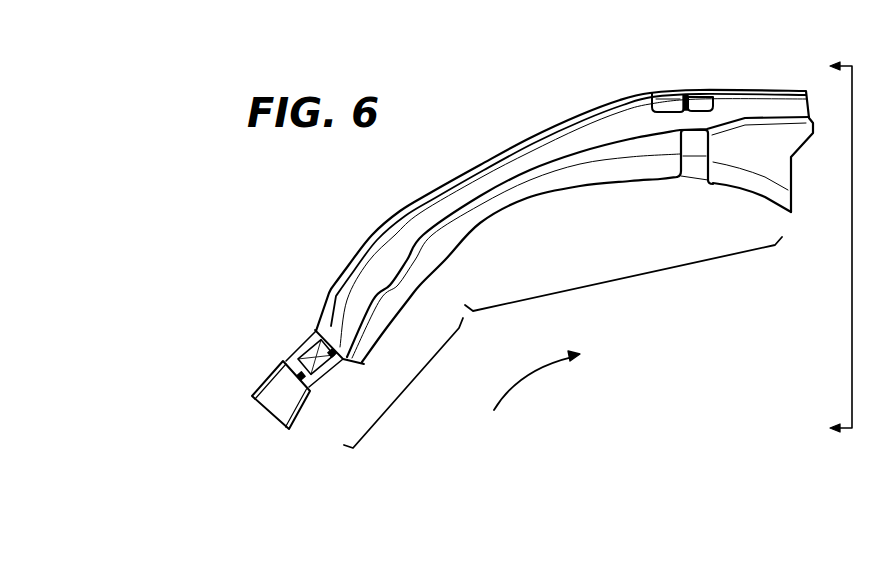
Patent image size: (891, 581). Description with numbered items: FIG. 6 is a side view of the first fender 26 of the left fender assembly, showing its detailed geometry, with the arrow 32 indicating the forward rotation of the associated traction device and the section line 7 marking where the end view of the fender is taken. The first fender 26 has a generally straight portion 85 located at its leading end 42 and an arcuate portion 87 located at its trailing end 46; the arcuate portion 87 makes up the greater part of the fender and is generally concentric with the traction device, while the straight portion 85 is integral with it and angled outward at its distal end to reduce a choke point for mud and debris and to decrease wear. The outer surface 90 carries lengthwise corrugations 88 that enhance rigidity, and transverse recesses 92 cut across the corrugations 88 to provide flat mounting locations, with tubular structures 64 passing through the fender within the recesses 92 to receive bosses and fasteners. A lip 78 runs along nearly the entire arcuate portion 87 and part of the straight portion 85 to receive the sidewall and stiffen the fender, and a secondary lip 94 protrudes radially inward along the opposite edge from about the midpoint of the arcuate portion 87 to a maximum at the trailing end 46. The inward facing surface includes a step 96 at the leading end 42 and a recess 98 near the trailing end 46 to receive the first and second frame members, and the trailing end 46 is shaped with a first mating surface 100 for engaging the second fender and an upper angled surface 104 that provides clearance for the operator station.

The section line 7- 7 is at (851, 246).
The first fender 26 is at (690, 362).
The arrow 32 is at (539, 371).
The leading end 42 is at (255, 381).
The trailing end 46 is at (549, 235).
The tubular structures 64 is at (686, 95).
The lip 78 is at (527, 197).
The straight portion 85 is at (422, 366).
The arcuate portion 87 is at (618, 282).
The corrugations 88 is at (652, 97).
The outer surface 90 is at (598, 105).
The transverse recesses 92 is at (700, 97).
The secondary lip 94 is at (697, 162).
The step 96 is at (342, 370).
The recess 98 is at (695, 147).
The first mating surface 100 is at (795, 185).
The upper angled surface 104 is at (810, 122).